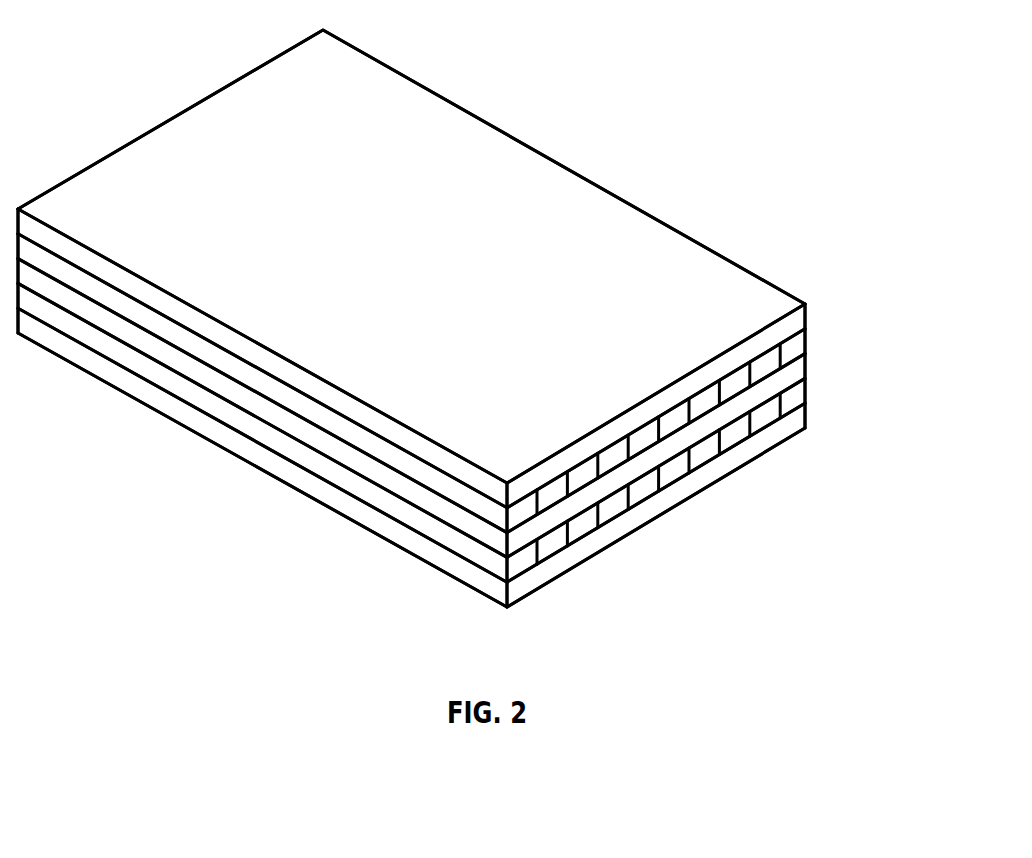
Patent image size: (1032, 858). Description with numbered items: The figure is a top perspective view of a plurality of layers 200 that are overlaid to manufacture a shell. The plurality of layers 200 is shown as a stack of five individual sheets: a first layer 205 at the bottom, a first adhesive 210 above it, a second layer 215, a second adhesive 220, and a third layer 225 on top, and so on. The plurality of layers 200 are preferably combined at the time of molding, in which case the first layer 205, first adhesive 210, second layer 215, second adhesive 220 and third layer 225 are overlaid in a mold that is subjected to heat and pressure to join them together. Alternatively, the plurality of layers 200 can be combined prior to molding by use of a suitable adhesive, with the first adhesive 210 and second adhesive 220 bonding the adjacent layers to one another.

The plurality of layers 200 is at (597, 52).
The first layer 205 is at (760, 458).
The first adhesive 210 is at (808, 393).
The second layer 215 is at (808, 368).
The second adhesive 220 is at (808, 340).
The third layer 225 is at (628, 223).